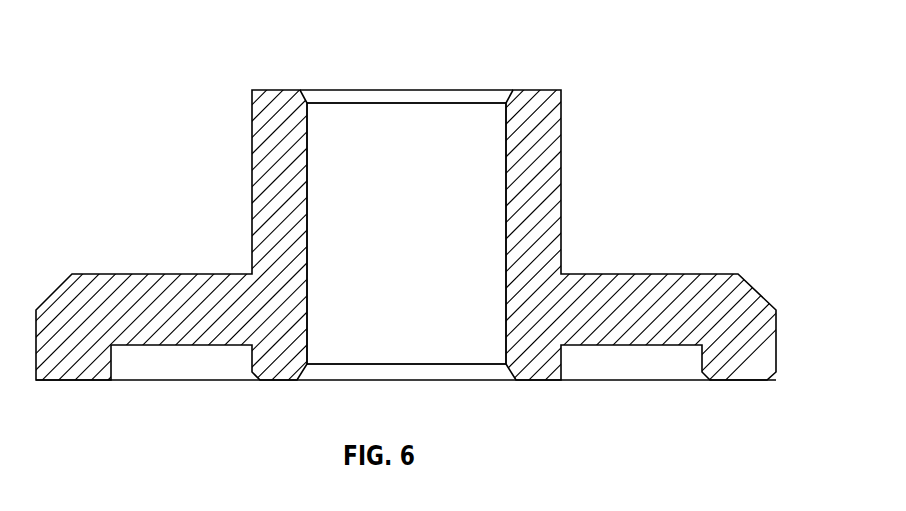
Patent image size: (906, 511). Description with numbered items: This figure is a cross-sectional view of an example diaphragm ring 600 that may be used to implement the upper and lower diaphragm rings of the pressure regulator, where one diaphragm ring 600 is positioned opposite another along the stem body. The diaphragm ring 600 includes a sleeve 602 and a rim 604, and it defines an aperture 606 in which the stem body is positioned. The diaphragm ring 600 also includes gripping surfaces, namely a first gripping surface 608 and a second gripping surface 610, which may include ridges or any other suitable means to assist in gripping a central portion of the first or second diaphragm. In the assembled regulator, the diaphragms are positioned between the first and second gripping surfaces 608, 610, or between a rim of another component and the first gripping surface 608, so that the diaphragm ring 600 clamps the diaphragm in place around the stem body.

The diaphragm ring 600 is at (113, 36).
The sleeve 602 is at (561, 189).
The rim 604 is at (777, 310).
The aperture 606 is at (429, 245).
The first gripping surface 608 is at (268, 383).
The second gripping surface 610 is at (275, 90).